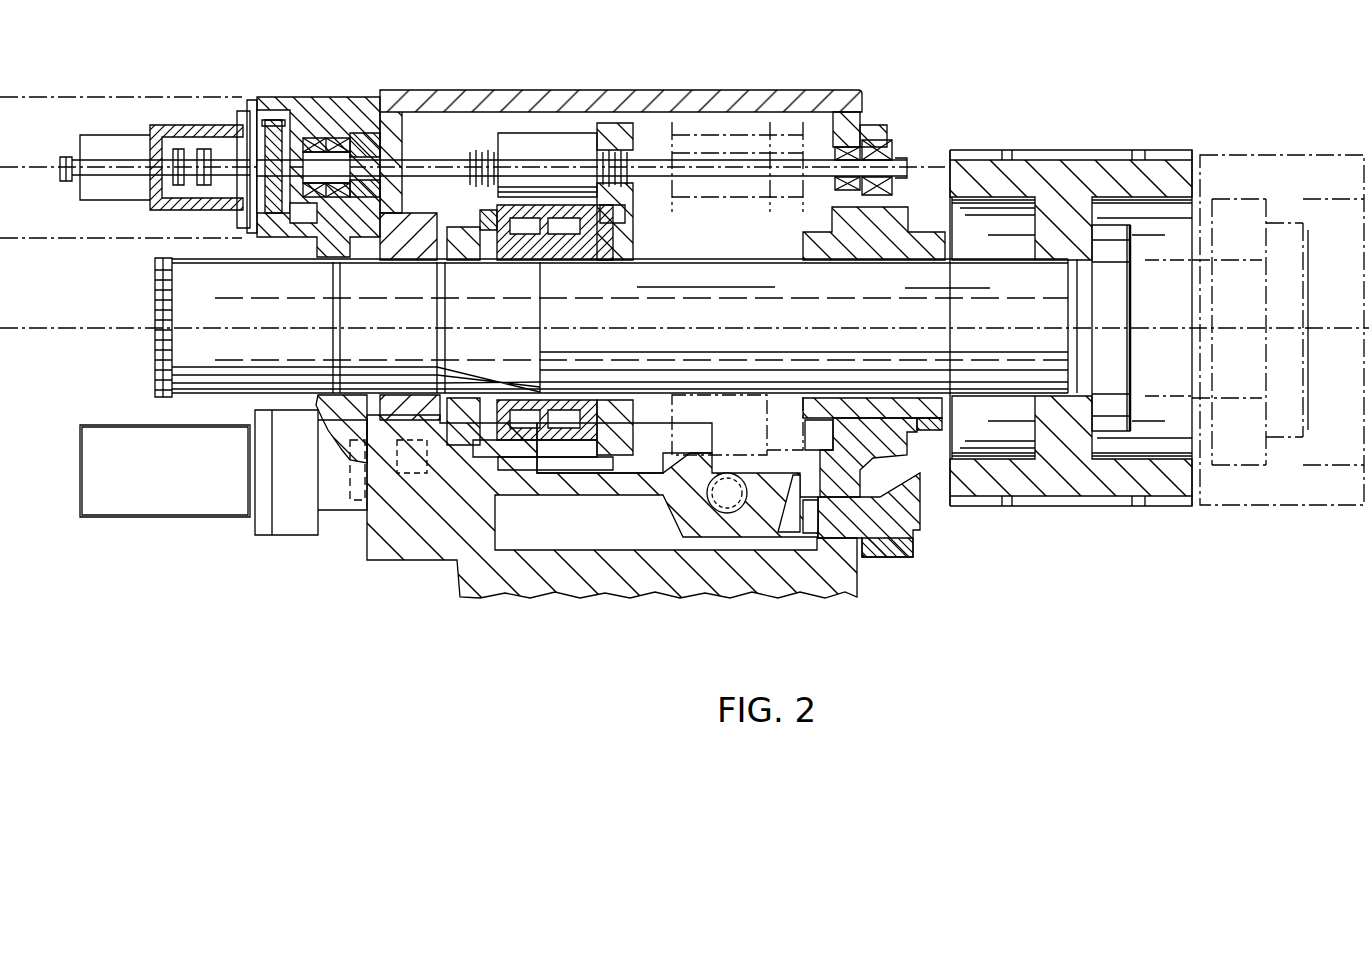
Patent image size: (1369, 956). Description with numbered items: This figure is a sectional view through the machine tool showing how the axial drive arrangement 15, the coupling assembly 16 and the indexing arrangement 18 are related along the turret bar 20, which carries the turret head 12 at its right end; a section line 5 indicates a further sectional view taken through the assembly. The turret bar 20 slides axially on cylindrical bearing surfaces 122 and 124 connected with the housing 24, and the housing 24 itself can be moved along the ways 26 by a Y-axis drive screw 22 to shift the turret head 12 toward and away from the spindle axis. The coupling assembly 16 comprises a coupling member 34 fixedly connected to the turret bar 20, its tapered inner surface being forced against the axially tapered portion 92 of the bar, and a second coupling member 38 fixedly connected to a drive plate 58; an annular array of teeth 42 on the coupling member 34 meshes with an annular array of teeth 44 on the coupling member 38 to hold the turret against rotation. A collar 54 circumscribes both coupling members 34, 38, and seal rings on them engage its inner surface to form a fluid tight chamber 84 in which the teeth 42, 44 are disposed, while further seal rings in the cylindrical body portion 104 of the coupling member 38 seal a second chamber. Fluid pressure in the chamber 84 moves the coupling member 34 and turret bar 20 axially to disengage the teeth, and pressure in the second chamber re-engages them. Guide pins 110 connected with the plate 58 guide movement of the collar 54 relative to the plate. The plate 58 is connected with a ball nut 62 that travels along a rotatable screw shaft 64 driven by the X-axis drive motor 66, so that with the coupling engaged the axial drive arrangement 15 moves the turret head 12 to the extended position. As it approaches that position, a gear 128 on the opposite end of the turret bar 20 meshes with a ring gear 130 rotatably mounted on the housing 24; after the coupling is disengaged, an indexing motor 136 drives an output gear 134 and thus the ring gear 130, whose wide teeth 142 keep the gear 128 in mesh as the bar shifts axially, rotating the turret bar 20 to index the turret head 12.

The section line 5- 5 is at (762, 645).
The turret head 12 is at (1048, 152).
The axial drive arrangement 15 is at (172, 108).
The coupling assembly 16 is at (490, 470).
The indexing arrangement 18 is at (165, 532).
The turret bar 20 is at (160, 338).
The Y-axis drive screw 22 is at (722, 505).
The housing 24 is at (626, 104).
The ways 26 is at (893, 533).
The coupling member 34 is at (487, 256).
The second coupling member 38 is at (560, 258).
The annular array of teeth 42 is at (484, 262).
The annular array of teeth 44 is at (527, 458).
The collar 54 is at (497, 212).
The drive plate 58 is at (773, 208).
The ball nut 62 is at (548, 165).
The screw shaft 64 is at (446, 162).
The X-axis drive motor 66 is at (80, 132).
The fluid tight chamber 84 is at (530, 352).
The axially tapered portion 92 is at (545, 348).
The cylindrical body portion 104 is at (642, 432).
The guide pins 110 is at (622, 246).
The bearing surface 122 is at (370, 258).
The bearing surface 124 is at (852, 252).
The gear 128 is at (335, 278).
The ring gear 130 is at (318, 425).
The output gear 134 is at (365, 495).
The indexing motor 136 is at (95, 442).
The teeth 142 is at (318, 252).